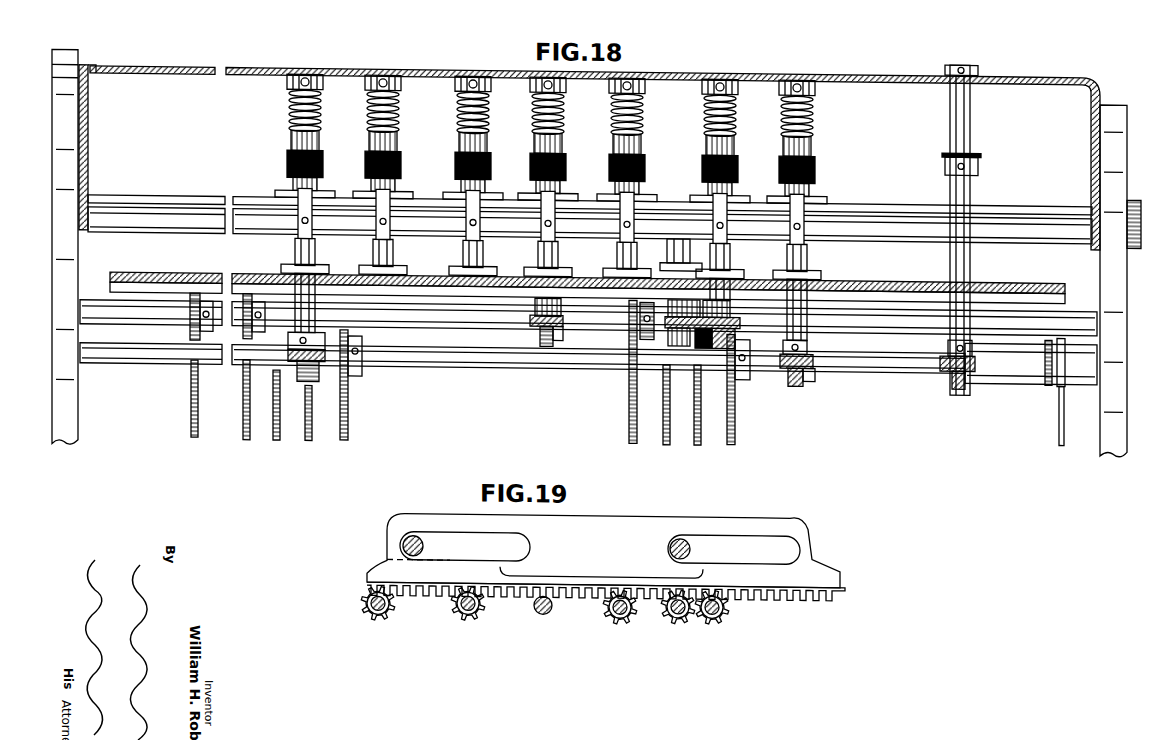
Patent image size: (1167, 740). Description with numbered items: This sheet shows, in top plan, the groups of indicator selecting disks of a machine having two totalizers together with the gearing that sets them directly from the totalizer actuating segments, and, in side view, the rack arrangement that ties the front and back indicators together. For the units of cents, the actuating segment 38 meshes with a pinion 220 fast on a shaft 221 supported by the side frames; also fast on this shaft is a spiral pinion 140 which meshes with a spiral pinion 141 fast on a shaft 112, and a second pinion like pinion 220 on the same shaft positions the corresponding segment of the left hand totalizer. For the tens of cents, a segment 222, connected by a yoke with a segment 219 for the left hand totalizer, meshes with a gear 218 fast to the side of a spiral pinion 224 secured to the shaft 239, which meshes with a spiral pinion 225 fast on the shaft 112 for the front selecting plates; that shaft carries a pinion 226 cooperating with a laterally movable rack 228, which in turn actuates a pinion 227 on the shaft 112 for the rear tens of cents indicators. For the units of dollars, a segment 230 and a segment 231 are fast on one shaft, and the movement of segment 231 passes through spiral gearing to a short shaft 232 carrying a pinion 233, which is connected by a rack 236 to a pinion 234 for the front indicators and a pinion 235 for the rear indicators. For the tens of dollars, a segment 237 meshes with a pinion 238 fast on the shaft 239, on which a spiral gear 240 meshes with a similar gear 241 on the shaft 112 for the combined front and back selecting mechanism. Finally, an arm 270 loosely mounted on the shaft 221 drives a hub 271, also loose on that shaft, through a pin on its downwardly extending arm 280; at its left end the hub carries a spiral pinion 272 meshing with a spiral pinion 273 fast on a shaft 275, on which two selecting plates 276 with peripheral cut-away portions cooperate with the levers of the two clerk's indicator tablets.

In FIG. 18, the units of cents actuating segment 38 is at (348, 425).
In FIG. 18, the shaft 112 is at (552, 266).
In FIG. 19, the shaft 112 is at (731, 620).
In FIG. 18, the spiral pinion 140 is at (796, 380).
In FIG. 18, the spiral pinion 141 is at (810, 362).
In FIG. 18, the gear 218 is at (698, 340).
In FIG. 18, the segment 219 is at (310, 439).
In FIG. 18, the pinion 220 is at (748, 372).
In FIG. 18, the shaft 221 is at (860, 364).
In FIG. 18, the segment 222 is at (697, 439).
In FIG. 18, the spiral pinion 224 is at (718, 342).
In FIG. 18, the spiral pinion 225 is at (718, 349).
In FIG. 18, the pinion 226 is at (730, 274).
In FIG. 19, the pinion 226 is at (735, 620).
In FIG. 18, the pinion 227 is at (407, 270).
In FIG. 19, the laterally movable rack 228 is at (597, 516).
In FIG. 18, the segment 230 is at (249, 440).
In FIG. 18, the segment 231 is at (665, 438).
In FIG. 18, the short shaft 232 is at (682, 246).
In FIG. 19, the short shaft 232 is at (704, 616).
In FIG. 18, the pinion 233 is at (673, 264).
In FIG. 19, the pinion 233 is at (672, 619).
In FIG. 18, the pinion 234 is at (603, 272).
In FIG. 19, the pinion 234 is at (618, 619).
In FIG. 19, the pinion 235 is at (470, 616).
In FIG. 19, the rack 236 is at (533, 598).
In FIG. 18, the segment 237 is at (193, 437).
In FIG. 18, the pinion 238 is at (190, 331).
In FIG. 18, the shaft 239 is at (88, 310).
In FIG. 18, the spiral gear 240 is at (538, 335).
In FIG. 18, the spiral gear 241 is at (533, 312).
In FIG. 18, the arm 270 is at (1061, 440).
In FIG. 18, the hub 271 is at (1000, 359).
In FIG. 18, the spiral pinion 272 is at (955, 380).
In FIG. 18, the spiral pinion 273 is at (945, 370).
In FIG. 18, the shaft 275 is at (965, 198).
In FIG. 18, the selecting plates 276 is at (980, 158).
In FIG. 18, the downwardly extending arm 280 is at (1050, 378).